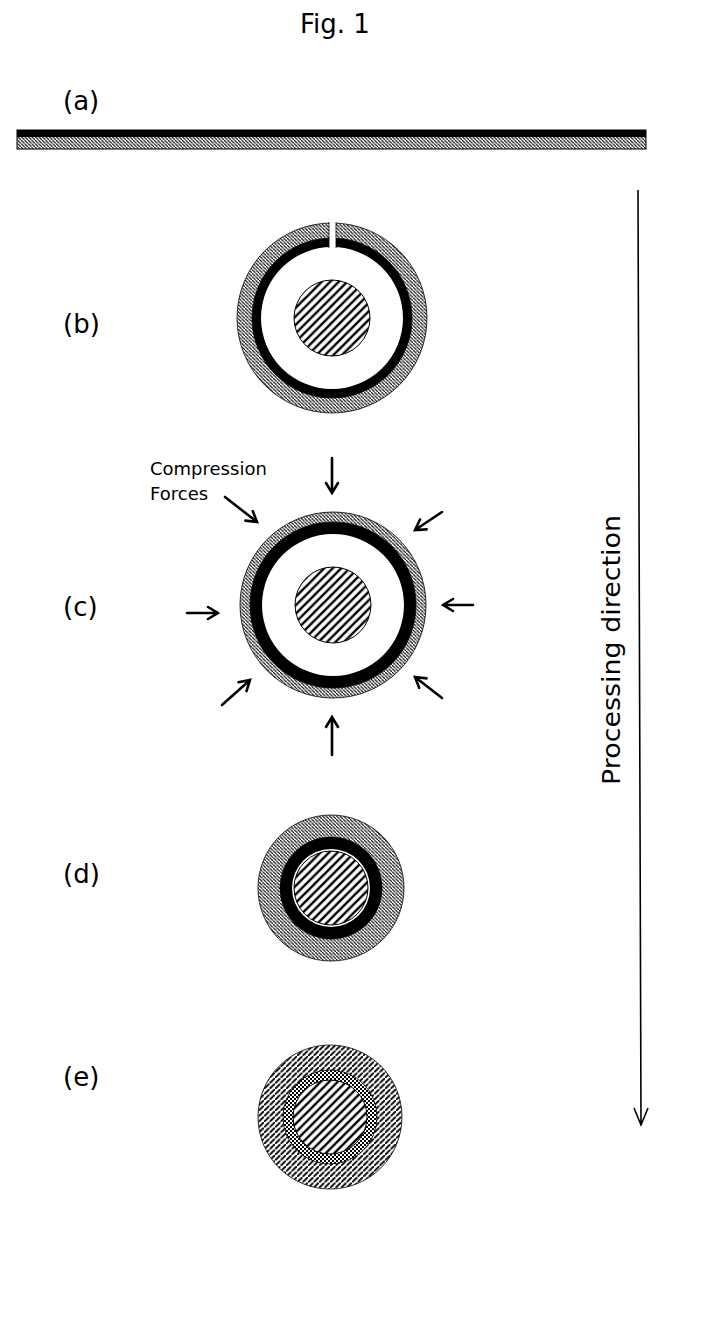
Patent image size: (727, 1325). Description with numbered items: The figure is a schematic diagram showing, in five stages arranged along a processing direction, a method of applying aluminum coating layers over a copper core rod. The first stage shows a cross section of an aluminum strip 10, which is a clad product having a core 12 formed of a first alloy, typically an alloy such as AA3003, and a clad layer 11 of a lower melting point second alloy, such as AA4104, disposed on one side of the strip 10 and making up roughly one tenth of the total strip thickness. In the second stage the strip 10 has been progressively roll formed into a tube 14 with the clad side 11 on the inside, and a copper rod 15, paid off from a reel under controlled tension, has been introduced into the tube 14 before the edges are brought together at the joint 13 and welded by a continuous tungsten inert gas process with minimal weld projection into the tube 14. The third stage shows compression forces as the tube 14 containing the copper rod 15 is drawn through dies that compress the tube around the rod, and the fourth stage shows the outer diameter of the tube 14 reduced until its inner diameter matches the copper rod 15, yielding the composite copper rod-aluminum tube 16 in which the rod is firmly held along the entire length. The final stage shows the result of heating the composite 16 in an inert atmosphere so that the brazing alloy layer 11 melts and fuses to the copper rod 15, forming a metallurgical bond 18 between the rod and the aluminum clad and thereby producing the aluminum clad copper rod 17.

The aluminum strip 10 is at (174, 110).
The clad layer 11 is at (527, 129).
The core 12 is at (537, 150).
The joint 13 is at (334, 221).
The tube 14 is at (424, 265).
The copper rod 15 is at (348, 332).
The composite copper rod-aluminum tube 16 is at (403, 860).
The aluminum clad copper rod 17 is at (402, 1075).
The metallurgical bond 18 is at (378, 1117).